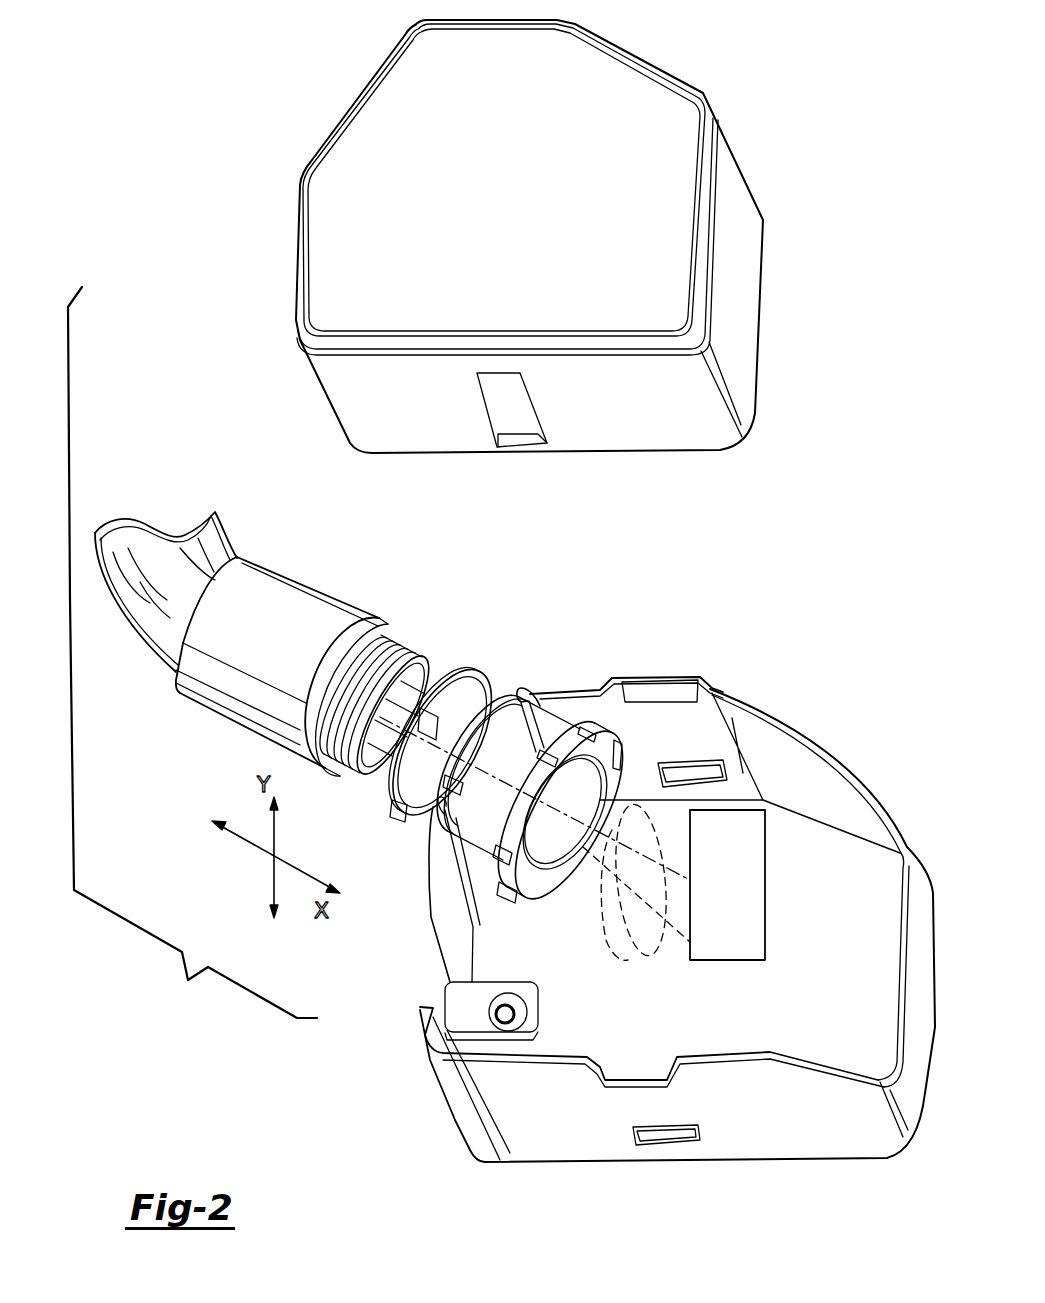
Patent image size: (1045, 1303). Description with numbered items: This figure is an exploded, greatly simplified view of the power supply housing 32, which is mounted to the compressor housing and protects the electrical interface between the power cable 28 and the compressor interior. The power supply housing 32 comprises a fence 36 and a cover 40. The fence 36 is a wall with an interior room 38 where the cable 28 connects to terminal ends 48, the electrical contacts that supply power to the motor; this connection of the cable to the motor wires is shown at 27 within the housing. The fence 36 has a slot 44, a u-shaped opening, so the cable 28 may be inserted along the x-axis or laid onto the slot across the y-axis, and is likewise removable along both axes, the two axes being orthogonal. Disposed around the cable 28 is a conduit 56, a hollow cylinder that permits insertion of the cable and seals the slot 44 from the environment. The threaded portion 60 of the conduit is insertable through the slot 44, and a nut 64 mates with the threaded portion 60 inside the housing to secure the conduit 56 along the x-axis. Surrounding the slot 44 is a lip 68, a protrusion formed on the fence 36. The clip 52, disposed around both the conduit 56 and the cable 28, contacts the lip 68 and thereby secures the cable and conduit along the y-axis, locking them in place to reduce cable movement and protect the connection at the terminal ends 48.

The connection of cable to wires 27 is at (612, 918).
The cable 28 is at (181, 552).
The power supply housing 32 is at (830, 501).
The fence 36 is at (888, 805).
The interior room 38 is at (829, 1010).
The cover 40 is at (661, 62).
The slot 44 is at (521, 742).
The terminal ends 48 is at (737, 887).
The clip 52 is at (398, 814).
The conduit 56 is at (328, 603).
The threaded portion 60 is at (430, 645).
The nut 64 is at (533, 897).
The lip 68 is at (533, 687).